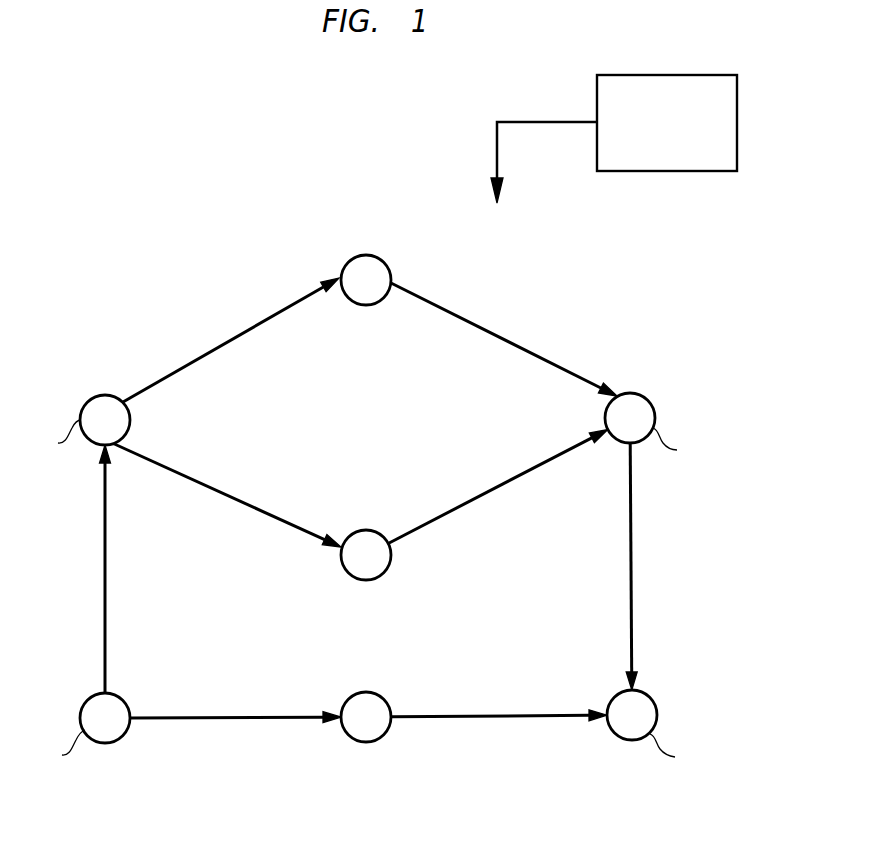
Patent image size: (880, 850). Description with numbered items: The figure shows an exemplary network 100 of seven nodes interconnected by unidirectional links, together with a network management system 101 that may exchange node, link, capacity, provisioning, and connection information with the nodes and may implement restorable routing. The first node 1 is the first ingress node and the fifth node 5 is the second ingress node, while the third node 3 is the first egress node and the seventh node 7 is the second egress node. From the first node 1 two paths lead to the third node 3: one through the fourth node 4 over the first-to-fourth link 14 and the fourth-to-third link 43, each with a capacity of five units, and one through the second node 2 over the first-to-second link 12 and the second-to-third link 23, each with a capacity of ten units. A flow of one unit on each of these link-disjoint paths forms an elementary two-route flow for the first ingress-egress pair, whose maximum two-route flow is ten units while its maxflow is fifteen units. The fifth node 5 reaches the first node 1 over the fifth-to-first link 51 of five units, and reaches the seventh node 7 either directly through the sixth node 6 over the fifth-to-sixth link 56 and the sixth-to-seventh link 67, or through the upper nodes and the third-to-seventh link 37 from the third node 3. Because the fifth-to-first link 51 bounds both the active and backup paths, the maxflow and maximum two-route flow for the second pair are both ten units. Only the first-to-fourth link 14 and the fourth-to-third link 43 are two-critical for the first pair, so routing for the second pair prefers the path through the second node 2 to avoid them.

The network 100 is at (159, 100).
The network management system 101 is at (740, 105).
The node N1 1 is at (105, 420).
The node N2 2 is at (366, 555).
The node N3 3 is at (630, 418).
The node N4 4 is at (366, 280).
The node N5 5 is at (105, 718).
The node N6 6 is at (366, 717).
The node N7 7 is at (632, 715).
The link l14 14 is at (242, 337).
The link l43 43 is at (535, 350).
The link l12 12 is at (218, 497).
The link l23 23 is at (492, 492).
The link l51 51 is at (107, 604).
The link l37 37 is at (632, 578).
The link l56 56 is at (210, 722).
The link l67 67 is at (470, 722).